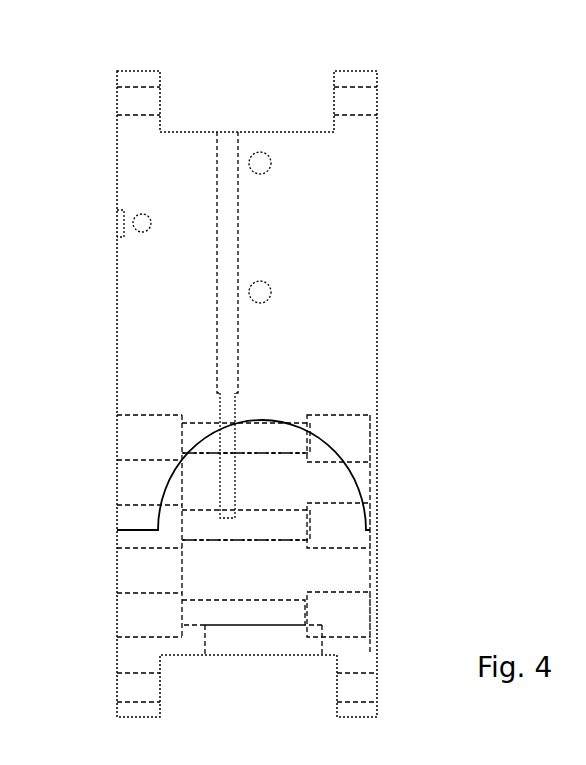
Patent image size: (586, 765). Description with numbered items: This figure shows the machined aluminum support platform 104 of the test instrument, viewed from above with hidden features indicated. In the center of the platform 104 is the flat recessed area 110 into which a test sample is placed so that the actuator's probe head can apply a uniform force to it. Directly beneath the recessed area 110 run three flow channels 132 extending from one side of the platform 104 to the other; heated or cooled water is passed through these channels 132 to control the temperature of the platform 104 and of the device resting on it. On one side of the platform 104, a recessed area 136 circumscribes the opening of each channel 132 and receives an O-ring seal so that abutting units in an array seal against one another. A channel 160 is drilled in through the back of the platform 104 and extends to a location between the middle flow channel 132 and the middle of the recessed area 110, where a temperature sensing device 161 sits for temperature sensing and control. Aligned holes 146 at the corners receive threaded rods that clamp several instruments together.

The support platform 104 is at (372, 168).
The aligned holes 146 is at (137, 100).
The channel 160 is at (237, 248).
The temperature sensing device 161 is at (218, 473).
The flat recessed area 110 is at (289, 493).
The flow channels 132 is at (273, 608).
The recessed area 136 is at (372, 582).